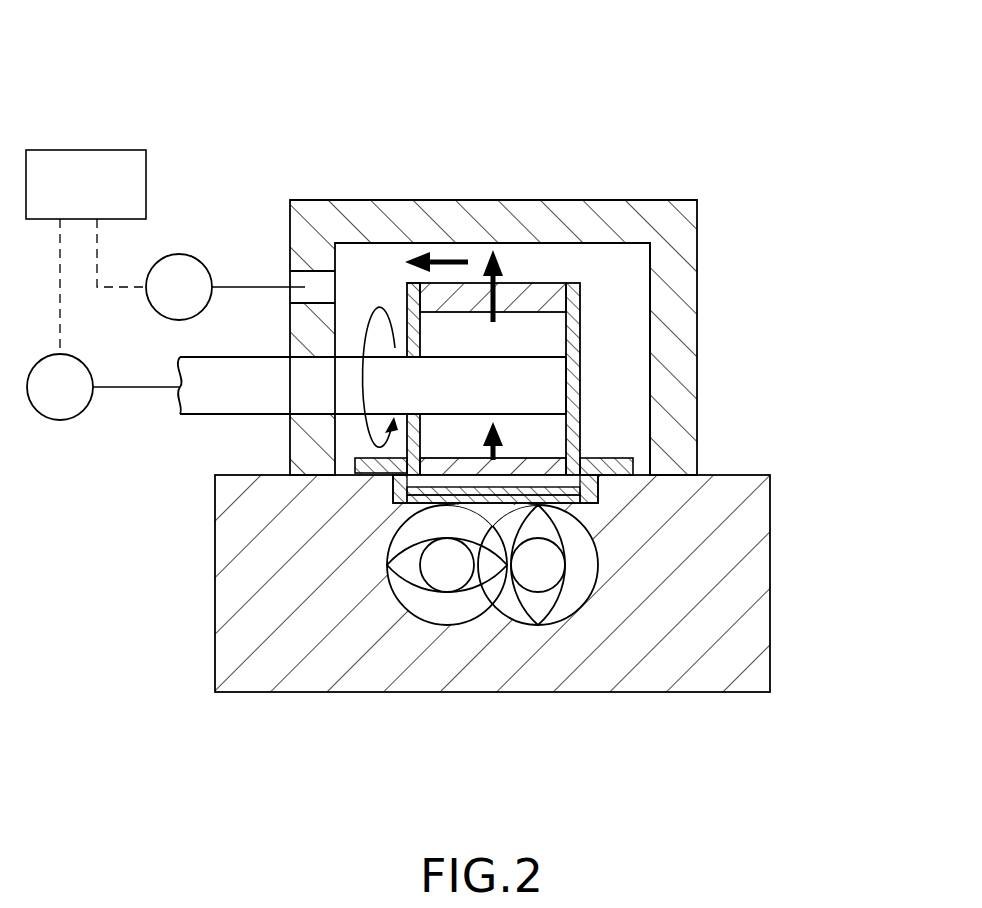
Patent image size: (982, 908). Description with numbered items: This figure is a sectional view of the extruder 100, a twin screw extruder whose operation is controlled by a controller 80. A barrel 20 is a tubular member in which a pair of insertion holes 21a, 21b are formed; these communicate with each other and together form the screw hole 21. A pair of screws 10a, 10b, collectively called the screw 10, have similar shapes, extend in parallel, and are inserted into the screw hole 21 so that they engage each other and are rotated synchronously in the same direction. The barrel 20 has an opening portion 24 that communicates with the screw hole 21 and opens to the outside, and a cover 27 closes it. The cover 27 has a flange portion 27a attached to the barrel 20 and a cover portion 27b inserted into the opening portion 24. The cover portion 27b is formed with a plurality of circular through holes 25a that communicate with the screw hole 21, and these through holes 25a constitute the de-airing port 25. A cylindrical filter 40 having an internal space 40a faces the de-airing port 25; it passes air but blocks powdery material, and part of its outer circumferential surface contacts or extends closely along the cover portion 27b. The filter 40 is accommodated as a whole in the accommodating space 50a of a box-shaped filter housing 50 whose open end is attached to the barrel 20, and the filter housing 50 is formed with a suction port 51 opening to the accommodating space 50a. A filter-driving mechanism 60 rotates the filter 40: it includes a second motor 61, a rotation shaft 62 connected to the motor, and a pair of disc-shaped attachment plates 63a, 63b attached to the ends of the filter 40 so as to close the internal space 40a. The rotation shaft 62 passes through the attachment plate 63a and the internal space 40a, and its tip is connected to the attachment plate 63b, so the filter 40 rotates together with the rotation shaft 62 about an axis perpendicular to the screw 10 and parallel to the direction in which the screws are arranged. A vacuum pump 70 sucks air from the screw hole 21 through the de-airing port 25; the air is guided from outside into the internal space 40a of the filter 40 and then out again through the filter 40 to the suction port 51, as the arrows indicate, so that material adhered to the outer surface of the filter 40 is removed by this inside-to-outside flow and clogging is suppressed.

The extruder 100 is at (146, 92).
The controller 80 is at (120, 150).
The vacuum pump 70 is at (178, 254).
The filter-driving mechanism 60 is at (296, 425).
The second motor 61 is at (58, 420).
The rotation shaft 62 is at (220, 393).
The filter housing 50 is at (436, 210).
The accommodating space 50a is at (632, 242).
The suction port 51 is at (325, 268).
The cylindrical filter 40 is at (578, 312).
The internal space 40a is at (540, 332).
The attachment plate 63a is at (405, 283).
The attachment plate 63b is at (574, 285).
The barrel 20 is at (459, 594).
The opening portion 24 is at (398, 510).
The de-airing port 25 is at (492, 520).
The through holes 25a is at (560, 498).
The cover 27 is at (640, 447).
The flange portion 27a is at (590, 488).
The cover portion 27b is at (598, 497).
The screw hole 21 is at (445, 622).
The insertion hole 21a is at (419, 606).
The insertion hole 21b is at (510, 607).
The screw 10 is at (494, 636).
The screw 10a is at (440, 578).
The screw 10b is at (538, 636).